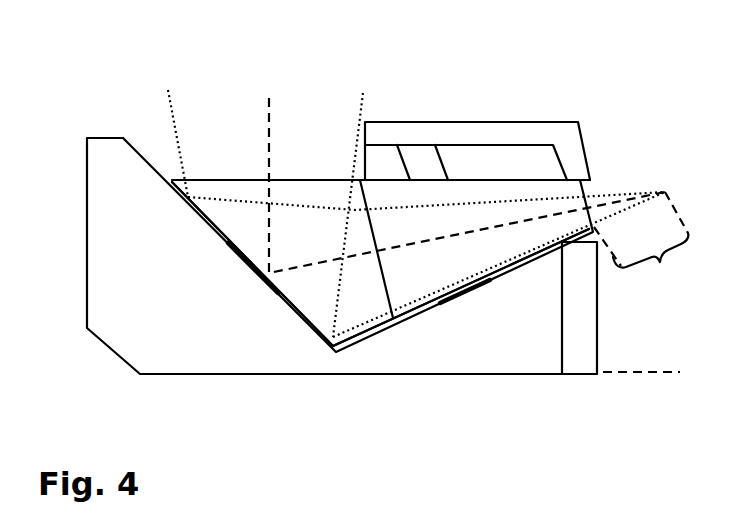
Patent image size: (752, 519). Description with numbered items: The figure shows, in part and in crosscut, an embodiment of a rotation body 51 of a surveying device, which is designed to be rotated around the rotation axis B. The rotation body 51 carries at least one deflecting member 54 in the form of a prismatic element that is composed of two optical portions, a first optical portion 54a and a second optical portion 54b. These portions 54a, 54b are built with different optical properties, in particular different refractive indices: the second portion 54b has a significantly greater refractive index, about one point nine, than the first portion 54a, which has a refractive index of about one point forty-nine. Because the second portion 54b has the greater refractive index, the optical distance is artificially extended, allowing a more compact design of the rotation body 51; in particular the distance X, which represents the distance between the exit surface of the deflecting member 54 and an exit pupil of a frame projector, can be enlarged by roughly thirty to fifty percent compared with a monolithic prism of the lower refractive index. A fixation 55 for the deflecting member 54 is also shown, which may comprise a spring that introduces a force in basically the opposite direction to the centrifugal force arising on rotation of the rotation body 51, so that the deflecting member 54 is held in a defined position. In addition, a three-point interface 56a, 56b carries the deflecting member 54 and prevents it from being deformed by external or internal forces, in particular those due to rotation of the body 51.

The rotation body 51 is at (115, 49).
The deflecting member 54 is at (324, 153).
The first optical portion 54a is at (320, 288).
The second optical portion 54b is at (437, 268).
The fixation 55 is at (417, 160).
The three-point interface 56a is at (242, 258).
The three-point interface 56b is at (462, 300).
The distance X is at (641, 245).
The rotation axis B is at (652, 372).